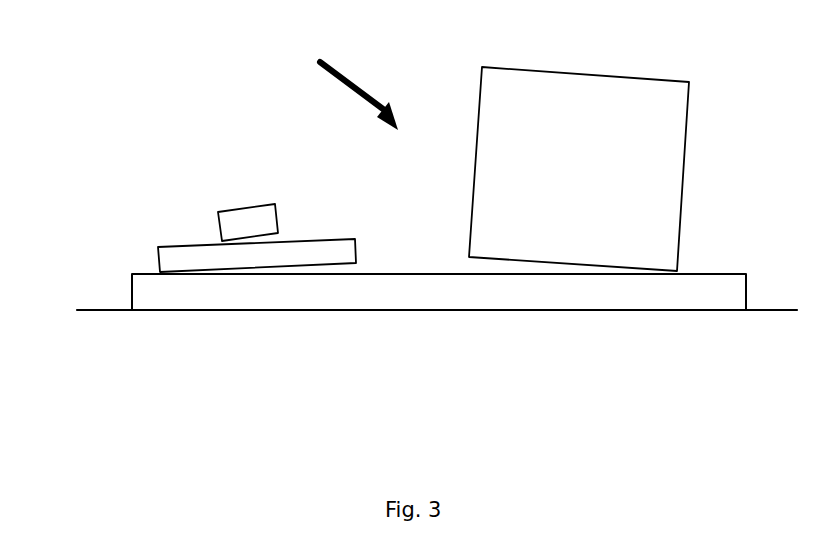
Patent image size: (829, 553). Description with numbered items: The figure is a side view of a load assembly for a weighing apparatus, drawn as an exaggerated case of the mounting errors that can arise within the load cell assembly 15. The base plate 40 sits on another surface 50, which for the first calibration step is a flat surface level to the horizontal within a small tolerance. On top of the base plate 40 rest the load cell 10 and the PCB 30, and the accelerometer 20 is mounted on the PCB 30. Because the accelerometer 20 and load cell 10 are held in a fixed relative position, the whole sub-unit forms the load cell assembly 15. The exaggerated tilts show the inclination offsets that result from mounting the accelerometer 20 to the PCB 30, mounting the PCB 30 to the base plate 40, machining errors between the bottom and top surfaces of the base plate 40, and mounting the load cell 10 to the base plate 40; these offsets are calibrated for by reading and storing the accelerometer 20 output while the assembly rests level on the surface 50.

The load cell 10 is at (652, 143).
The load cell assembly 15 is at (348, 80).
The accelerometer 20 is at (247, 217).
The PCB 30 is at (173, 261).
The base plate 40 is at (146, 294).
The surface 50 is at (775, 320).